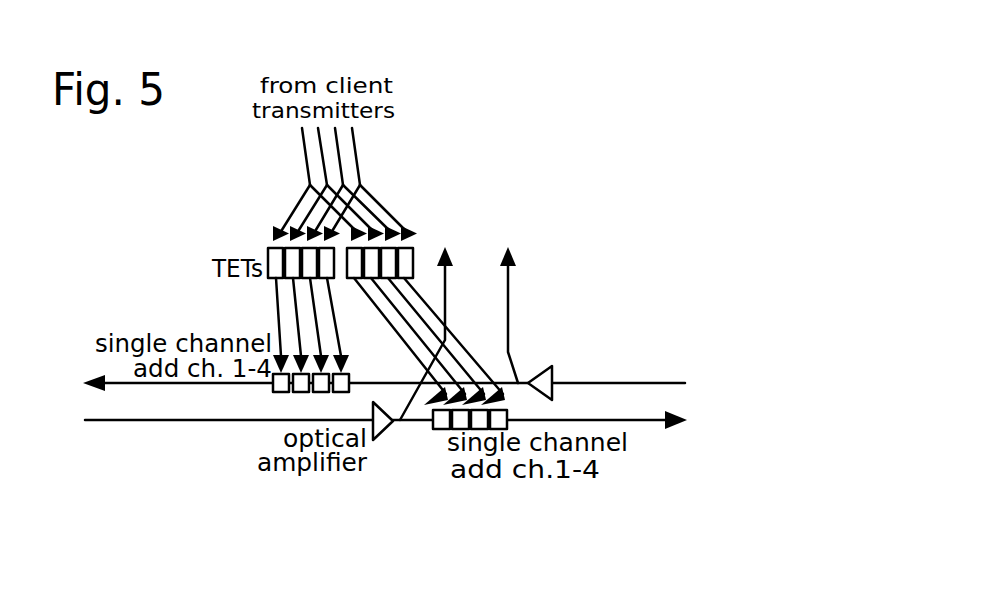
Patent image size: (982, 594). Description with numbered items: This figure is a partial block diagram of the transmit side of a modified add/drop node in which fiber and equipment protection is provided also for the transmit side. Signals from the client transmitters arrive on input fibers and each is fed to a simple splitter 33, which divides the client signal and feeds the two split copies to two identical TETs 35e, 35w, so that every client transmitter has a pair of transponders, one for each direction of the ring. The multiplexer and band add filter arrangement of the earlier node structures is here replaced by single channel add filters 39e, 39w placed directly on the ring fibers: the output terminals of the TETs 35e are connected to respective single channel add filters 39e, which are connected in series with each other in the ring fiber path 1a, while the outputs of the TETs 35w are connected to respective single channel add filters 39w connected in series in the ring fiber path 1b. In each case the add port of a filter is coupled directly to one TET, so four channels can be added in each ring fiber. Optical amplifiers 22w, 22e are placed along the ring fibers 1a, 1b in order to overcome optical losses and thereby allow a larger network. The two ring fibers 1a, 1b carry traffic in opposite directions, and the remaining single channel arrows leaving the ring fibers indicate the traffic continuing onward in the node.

The simple splitter 33 is at (310, 185).
The TET 35e is at (268, 247).
The TET 35w is at (413, 247).
The single channel add filter 39e is at (273, 392).
The single channel add filter 39w is at (435, 430).
The optical amplifier 22e is at (385, 432).
The optical amplifier 22w is at (555, 378).
The ring fiber 1a is at (666, 383).
The ring fiber 1b is at (661, 420).